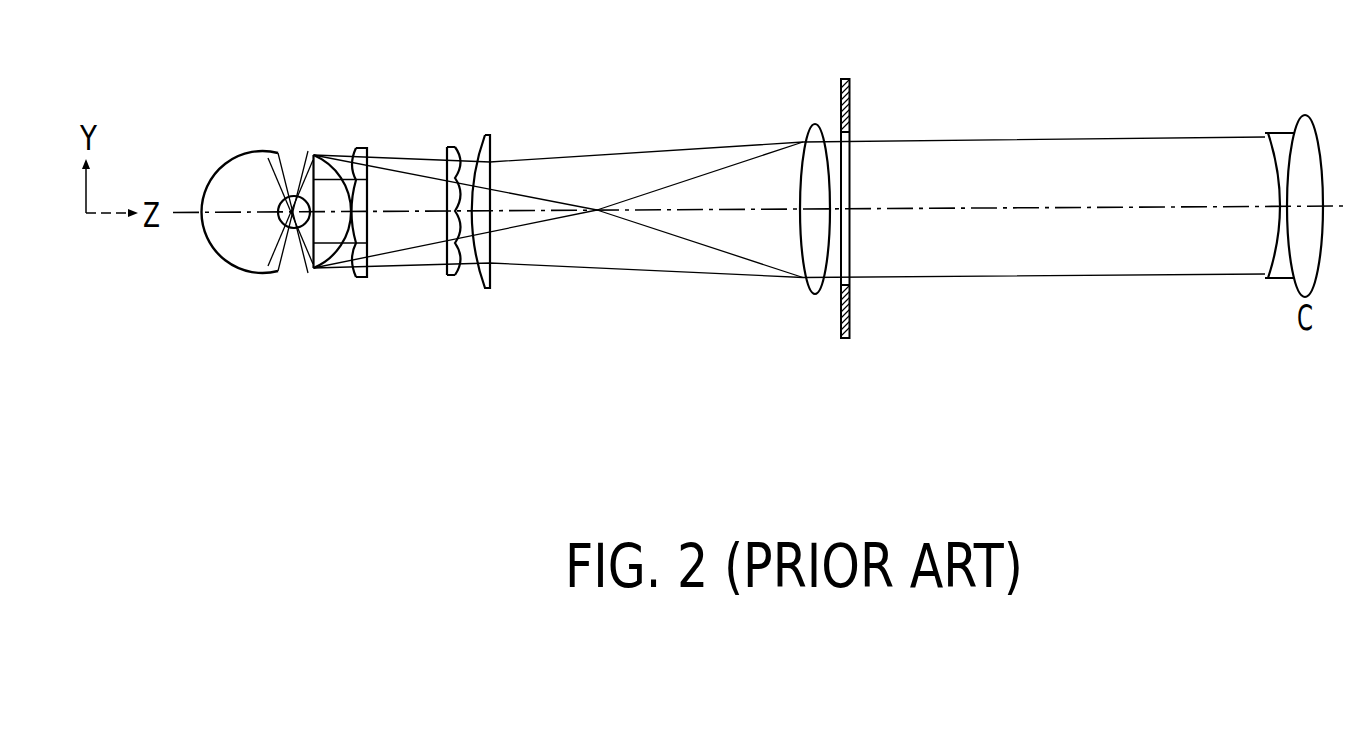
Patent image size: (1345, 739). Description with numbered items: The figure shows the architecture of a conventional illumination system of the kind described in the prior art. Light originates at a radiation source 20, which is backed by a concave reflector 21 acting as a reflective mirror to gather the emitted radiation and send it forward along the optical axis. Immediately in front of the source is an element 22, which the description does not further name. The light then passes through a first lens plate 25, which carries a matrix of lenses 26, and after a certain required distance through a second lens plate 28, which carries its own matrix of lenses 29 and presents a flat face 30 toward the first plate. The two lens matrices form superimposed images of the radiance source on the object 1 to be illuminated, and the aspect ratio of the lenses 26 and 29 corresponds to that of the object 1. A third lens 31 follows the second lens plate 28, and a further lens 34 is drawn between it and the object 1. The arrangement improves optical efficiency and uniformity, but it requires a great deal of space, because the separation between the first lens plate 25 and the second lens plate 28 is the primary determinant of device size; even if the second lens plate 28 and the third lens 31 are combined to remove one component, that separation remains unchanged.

The object 1 is at (841, 315).
The radiation source 20 is at (290, 247).
The concave reflector 21 is at (242, 247).
The collimating lens block 22 is at (319, 263).
The first lens plate 25 is at (360, 275).
The matrix of lenses 26 is at (356, 158).
The second lens plate 28 is at (449, 147).
The matrix of lenses 29 is at (458, 268).
The flat face of lens plate 28 30 is at (447, 228).
The third lens 31 is at (492, 272).
The field lens 34 is at (803, 287).